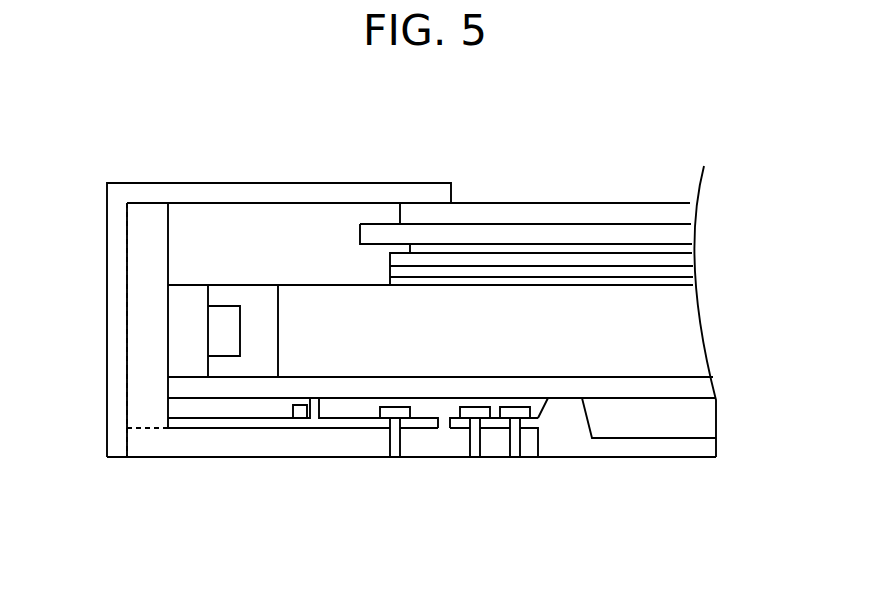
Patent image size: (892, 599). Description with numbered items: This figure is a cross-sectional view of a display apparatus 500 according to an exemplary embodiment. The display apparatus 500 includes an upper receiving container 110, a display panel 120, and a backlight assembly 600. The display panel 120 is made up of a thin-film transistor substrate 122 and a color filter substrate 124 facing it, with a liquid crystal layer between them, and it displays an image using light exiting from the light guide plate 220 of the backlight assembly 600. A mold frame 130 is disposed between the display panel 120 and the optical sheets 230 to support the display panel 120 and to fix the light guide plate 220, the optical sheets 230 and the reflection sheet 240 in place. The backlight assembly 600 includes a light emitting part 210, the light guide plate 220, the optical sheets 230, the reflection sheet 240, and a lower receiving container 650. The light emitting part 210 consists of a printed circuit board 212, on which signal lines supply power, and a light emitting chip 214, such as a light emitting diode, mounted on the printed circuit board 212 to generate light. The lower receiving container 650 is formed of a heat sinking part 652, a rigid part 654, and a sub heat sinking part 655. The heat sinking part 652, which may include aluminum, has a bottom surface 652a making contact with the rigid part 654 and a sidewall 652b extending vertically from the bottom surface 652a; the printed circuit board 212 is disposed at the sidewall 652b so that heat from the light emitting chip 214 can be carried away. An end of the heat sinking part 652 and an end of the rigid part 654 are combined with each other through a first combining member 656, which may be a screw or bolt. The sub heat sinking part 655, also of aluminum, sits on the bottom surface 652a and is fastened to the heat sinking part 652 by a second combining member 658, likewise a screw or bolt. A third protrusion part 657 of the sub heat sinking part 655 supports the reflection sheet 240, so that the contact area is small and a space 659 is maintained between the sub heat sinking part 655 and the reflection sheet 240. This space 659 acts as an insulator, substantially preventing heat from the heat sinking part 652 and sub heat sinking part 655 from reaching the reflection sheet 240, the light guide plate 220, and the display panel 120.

The display apparatus 500 is at (664, 156).
The upper receiving container 110 is at (290, 183).
The mold frame 130 is at (218, 217).
The display panel 120 is at (750, 205).
The thin-film transistor substrate 122 is at (690, 232).
The color filter substrate 124 is at (690, 212).
The light emitting part 210 is at (50, 313).
The printed circuit board 212 is at (177, 360).
The light emitting chip 214 is at (217, 322).
The light guide plate 220 is at (690, 333).
The optical sheets 230 is at (720, 255).
The reflection sheet 240 is at (700, 386).
The backlight assembly 600 is at (758, 255).
The lower receiving container 650 is at (620, 548).
The heat sinking part 652 is at (228, 512).
The bottom surface 652a is at (198, 438).
The sidewall 652b is at (142, 417).
The rigid part 654 is at (597, 452).
The sub heat sinking part 655 is at (257, 428).
The first combining member 656 is at (490, 442).
The third protrusion part 657 is at (291, 407).
The second combining member 658 is at (408, 442).
The space 659 is at (344, 408).